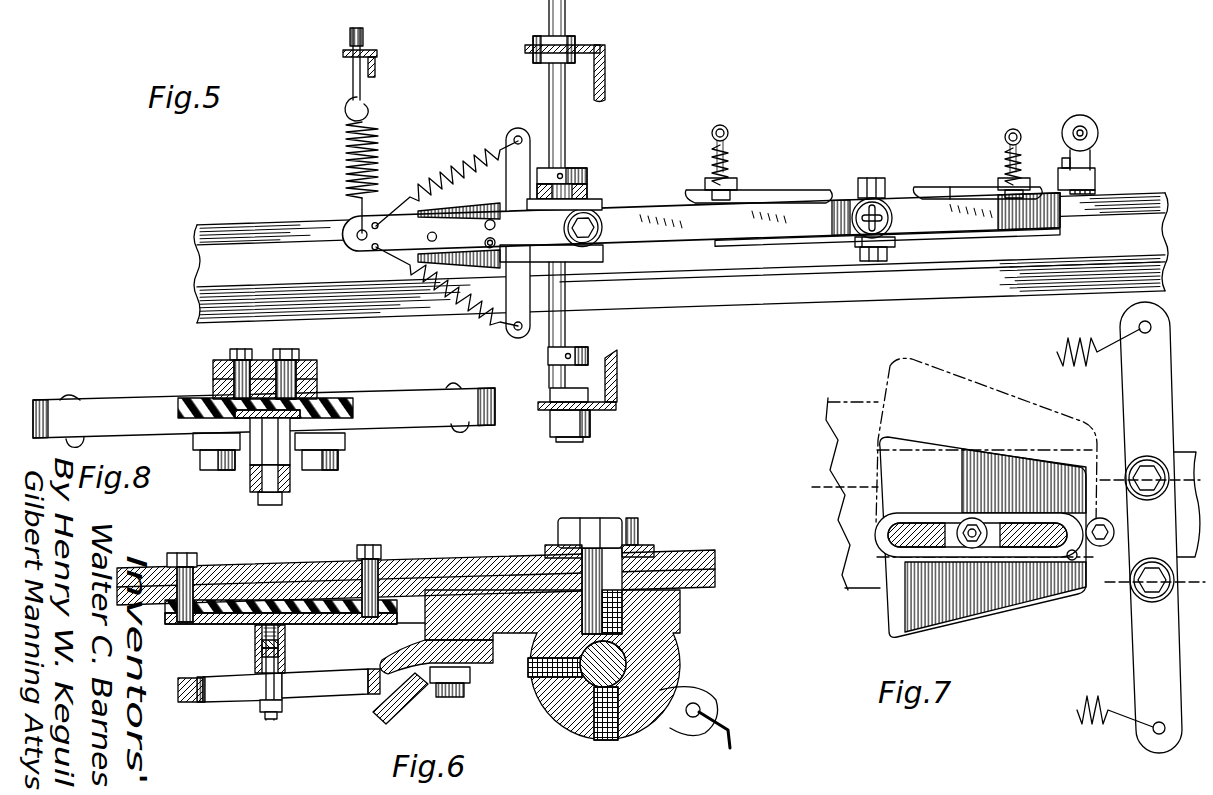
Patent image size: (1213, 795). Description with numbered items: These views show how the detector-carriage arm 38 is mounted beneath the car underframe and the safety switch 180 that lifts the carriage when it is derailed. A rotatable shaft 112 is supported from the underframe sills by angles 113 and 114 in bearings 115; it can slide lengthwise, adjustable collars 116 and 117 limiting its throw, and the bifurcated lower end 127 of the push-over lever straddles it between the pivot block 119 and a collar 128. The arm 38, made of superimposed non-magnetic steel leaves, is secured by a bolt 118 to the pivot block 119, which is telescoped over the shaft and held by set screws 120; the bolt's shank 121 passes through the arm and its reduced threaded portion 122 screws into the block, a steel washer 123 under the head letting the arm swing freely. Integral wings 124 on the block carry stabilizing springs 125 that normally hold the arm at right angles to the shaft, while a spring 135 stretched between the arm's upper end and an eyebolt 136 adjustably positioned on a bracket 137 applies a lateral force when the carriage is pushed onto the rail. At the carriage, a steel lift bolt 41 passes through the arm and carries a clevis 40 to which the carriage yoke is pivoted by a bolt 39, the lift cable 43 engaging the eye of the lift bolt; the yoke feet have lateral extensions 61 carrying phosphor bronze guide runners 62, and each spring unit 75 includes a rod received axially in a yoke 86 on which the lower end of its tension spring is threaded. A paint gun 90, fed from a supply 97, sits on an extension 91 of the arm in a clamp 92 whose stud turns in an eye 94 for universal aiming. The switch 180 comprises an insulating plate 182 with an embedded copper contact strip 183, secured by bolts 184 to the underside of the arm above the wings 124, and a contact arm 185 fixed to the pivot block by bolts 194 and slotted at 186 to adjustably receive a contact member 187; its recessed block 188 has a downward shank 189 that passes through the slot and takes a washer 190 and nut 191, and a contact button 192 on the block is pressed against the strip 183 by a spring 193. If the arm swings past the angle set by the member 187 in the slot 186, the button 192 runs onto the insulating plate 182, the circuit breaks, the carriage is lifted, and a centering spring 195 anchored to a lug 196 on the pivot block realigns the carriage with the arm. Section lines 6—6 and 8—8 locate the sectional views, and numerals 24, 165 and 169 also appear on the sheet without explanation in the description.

In FIG. 5, the section line 6 is at (623, 241).
In FIG. 6, the section line 8 is at (270, 722).
In FIG. 5, the rail bar 24 is at (208, 262).
In FIG. 5, the arm 38 is at (703, 234).
In FIG. 8, the arm 38 is at (212, 368).
In FIG. 6, the arm 38 is at (455, 556).
In FIG. 7, the arm 38 is at (836, 543).
In FIG. 5, the bolt 39 is at (876, 261).
In FIG. 5, the clevis 40 is at (889, 246).
In FIG. 5, the lift bolt 41 is at (863, 246).
In FIG. 5, the lift cable 43 is at (866, 204).
In FIG. 5, the lateral extensions 61 is at (955, 187).
In FIG. 5, the guide runners 62 is at (921, 187).
In FIG. 5, the unit 75 is at (711, 166).
In FIG. 5, the yoke 86 is at (1012, 178).
In FIG. 5, the paint gun 90 is at (1091, 126).
In FIG. 5, the extension 91 is at (977, 225).
In FIG. 5, the clamp 92 is at (1099, 136).
In FIG. 5, the eye 94 is at (1096, 176).
In FIG. 5, the source of supply 97 is at (1081, 124).
In FIG. 5, the rotatable shaft 112 is at (552, 86).
In FIG. 6, the rotatable shaft 112 is at (627, 663).
In FIG. 5, the angle 113 is at (606, 70).
In FIG. 5, the angle 114 is at (618, 380).
In FIG. 5, the bearings 115 is at (538, 38).
In FIG. 5, the collar 116 is at (585, 438).
In FIG. 5, the collar 117 is at (590, 350).
In FIG. 5, the bolt 118 is at (587, 236).
In FIG. 6, the bolt 118 is at (590, 518).
In FIG. 5, the pivot block 119 is at (598, 205).
In FIG. 6, the pivot block 119 is at (681, 609).
In FIG. 6, the set screws 120 is at (534, 670).
In FIG. 6, the shank 121 is at (583, 560).
In FIG. 6, the reduced threaded portion 122 is at (684, 628).
In FIG. 6, the steel washer 123 is at (645, 546).
In FIG. 5, the wings 124 is at (523, 150).
In FIG. 8, the wings 124 is at (107, 412).
In FIG. 7, the wings 124 is at (1121, 393).
In FIG. 5, the stabilizing springs 125 is at (468, 180).
In FIG. 8, the stabilizing springs 125 is at (68, 395).
In FIG. 7, the stabilizing springs 125 is at (1055, 352).
In FIG. 5, the bifurcated lower end 127 is at (590, 192).
In FIG. 5, the collar 128 is at (572, 168).
In FIG. 5, the spring 135 is at (345, 160).
In FIG. 5, the eye 136 is at (351, 82).
In FIG. 5, the bracket 137 is at (376, 56).
In FIG. 8, the nut 165 is at (290, 470).
In FIG. 6, the nut 165 is at (190, 703).
In FIG. 6, the plate 169 is at (286, 682).
In FIG. 6, the safety switch 180 is at (338, 632).
In FIG. 5, the insulating plate 182 is at (466, 210).
In FIG. 8, the insulating plate 182 is at (345, 400).
In FIG. 6, the insulating plate 182 is at (170, 610).
In FIG. 8, the contact strip 183 is at (247, 418).
In FIG. 6, the contact strip 183 is at (212, 623).
In FIG. 7, the contact strip 183 is at (877, 553).
In FIG. 5, the bolts 184 is at (425, 237).
In FIG. 8, the bolts 184 is at (286, 349).
In FIG. 6, the bolts 184 is at (172, 555).
In FIG. 7, the bolts 184 is at (1070, 560).
In FIG. 7, the contact arm 185 is at (923, 545).
In FIG. 6, the slot 186 is at (233, 703).
In FIG. 7, the slot 186 is at (930, 541).
In FIG. 8, the contact member 187 is at (258, 448).
In FIG. 6, the contact member 187 is at (286, 638).
In FIG. 6, the recessed block 188 is at (286, 657).
In FIG. 7, the shank 189 is at (971, 518).
In FIG. 6, the washer 190 is at (283, 706).
In FIG. 7, the washer 190 is at (965, 520).
In FIG. 6, the nut 191 is at (278, 714).
In FIG. 7, the nut 191 is at (978, 520).
In FIG. 6, the contact button 192 is at (261, 642).
In FIG. 6, the spring 193 is at (261, 653).
In FIG. 8, the bolts 194 is at (344, 466).
In FIG. 6, the bolts 194 is at (452, 698).
In FIG. 7, the bolts 194 is at (1135, 462).
In FIG. 6, the centering spring 195 is at (733, 742).
In FIG. 6, the lug 196 is at (702, 706).